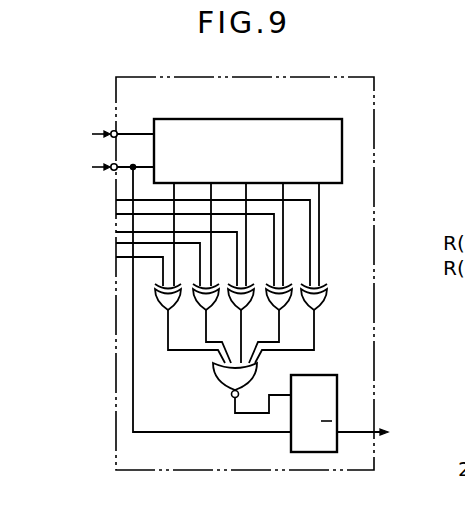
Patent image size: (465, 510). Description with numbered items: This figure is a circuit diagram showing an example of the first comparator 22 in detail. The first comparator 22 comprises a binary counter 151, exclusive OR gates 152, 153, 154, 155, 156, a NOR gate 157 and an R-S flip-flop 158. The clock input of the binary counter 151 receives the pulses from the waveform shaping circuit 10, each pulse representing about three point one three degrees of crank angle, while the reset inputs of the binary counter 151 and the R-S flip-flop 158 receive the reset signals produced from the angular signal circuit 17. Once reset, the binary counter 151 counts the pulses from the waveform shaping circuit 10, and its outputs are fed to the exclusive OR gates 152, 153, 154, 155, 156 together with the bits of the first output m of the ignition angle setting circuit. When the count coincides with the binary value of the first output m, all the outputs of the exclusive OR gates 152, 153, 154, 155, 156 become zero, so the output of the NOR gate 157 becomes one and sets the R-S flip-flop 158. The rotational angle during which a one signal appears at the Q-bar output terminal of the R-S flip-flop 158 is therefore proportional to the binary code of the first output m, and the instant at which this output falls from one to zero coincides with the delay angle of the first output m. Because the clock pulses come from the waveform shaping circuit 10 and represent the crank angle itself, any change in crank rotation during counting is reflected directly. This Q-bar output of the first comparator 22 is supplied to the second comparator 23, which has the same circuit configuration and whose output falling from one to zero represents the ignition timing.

The waveform shaping circuit 10 is at (108, 135).
The angular signal circuit 17 is at (176, 294).
The first comparator 22 is at (338, 77).
The second comparator 23 is at (381, 438).
The binary counter 151 is at (292, 119).
The exclusive OR gate 152 is at (157, 305).
The exclusive OR gate 153 is at (194, 305).
The exclusive OR gate 154 is at (252, 305).
The exclusive OR gate 155 is at (289, 305).
The exclusive OR gate 156 is at (323, 293).
The NOR gate 157 is at (222, 386).
The R-S flip-flop 158 is at (291, 446).
The first output m is at (109, 193).